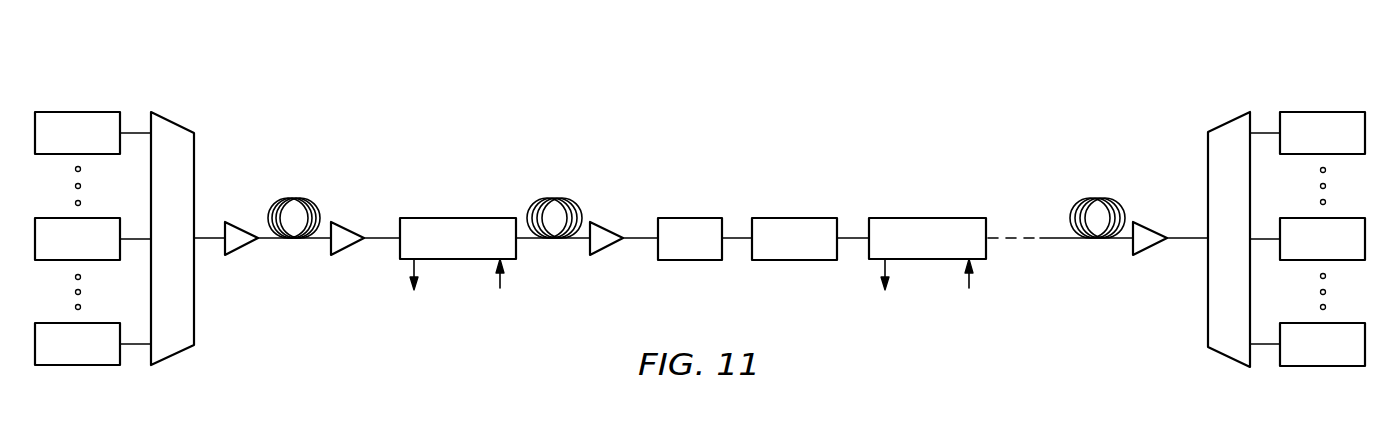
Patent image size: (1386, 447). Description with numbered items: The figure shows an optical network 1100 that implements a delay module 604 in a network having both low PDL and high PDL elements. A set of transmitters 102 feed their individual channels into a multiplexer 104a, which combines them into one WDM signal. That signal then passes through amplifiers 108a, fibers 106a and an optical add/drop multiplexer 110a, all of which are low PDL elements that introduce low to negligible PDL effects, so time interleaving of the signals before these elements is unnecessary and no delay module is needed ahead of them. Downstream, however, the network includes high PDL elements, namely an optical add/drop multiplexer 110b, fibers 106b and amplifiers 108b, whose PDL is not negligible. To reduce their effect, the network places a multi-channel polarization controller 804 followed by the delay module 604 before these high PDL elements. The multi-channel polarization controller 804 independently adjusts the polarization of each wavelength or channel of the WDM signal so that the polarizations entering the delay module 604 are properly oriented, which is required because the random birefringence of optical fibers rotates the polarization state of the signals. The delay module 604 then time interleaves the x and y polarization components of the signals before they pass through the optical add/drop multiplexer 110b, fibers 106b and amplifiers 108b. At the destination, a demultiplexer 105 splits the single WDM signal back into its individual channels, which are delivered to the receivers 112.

The optical network 1100 is at (638, 108).
The transmitters 102 is at (72, 112).
The multiplexer 104a is at (175, 123).
The fibers 106a is at (293, 198).
The amplifiers 108a is at (242, 246).
The optical add/drop multiplexer 110a is at (458, 218).
The multi-channel polarization controller 804 is at (687, 218).
The delay module 604 is at (795, 218).
The optical add/drop multiplexer 110b is at (928, 218).
The fibers 106b is at (1102, 197).
The amplifiers 108b is at (1150, 230).
The demultiplexer 105 is at (1230, 121).
The receivers 112 is at (1328, 112).